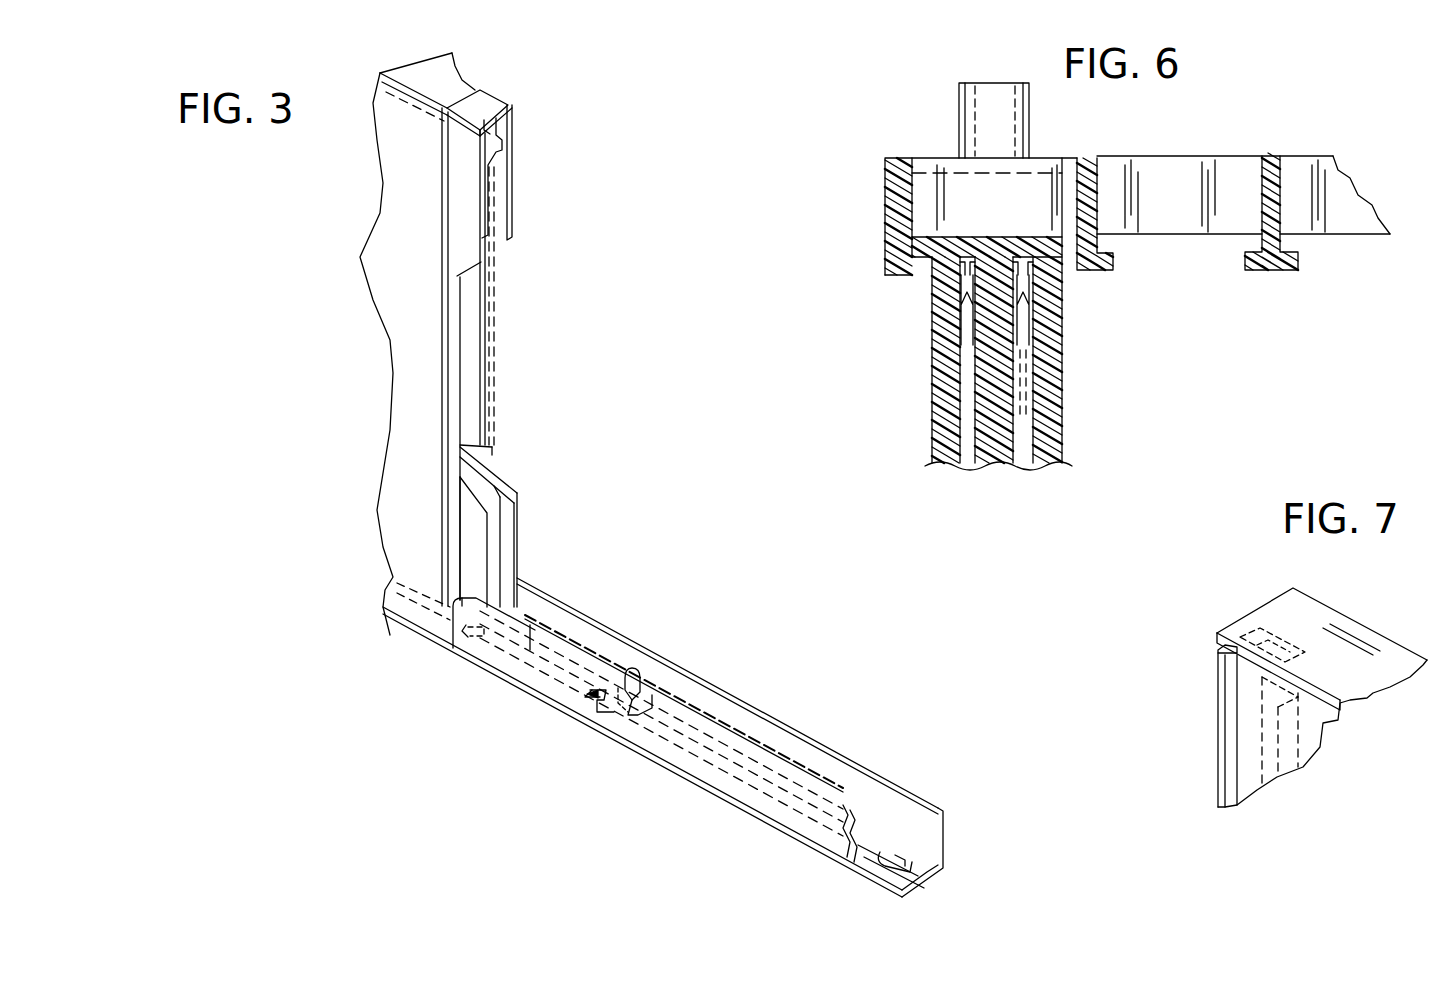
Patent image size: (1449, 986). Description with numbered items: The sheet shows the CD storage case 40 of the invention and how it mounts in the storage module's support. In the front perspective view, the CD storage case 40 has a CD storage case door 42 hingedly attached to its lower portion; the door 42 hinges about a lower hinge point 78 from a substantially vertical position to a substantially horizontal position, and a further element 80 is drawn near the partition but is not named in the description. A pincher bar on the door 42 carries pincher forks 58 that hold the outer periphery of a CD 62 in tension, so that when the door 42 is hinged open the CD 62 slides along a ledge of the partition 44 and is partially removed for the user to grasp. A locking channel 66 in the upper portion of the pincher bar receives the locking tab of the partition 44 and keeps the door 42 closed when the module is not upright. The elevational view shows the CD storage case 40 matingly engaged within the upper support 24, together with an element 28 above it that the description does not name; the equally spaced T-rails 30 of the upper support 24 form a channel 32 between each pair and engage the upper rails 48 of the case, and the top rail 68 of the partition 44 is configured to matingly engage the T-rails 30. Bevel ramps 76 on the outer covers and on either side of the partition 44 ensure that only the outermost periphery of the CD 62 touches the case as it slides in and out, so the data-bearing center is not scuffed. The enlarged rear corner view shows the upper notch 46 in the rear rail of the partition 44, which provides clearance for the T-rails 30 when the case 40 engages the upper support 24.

In FIG. 6, the upper support 24 is at (868, 238).
In FIG. 6, the tube 28 is at (960, 123).
In FIG. 6, the T-rails 30 is at (1086, 160).
In FIG. 6, the channel 32 is at (1168, 266).
In FIG. 3, the CD storage case 40 is at (560, 217).
In FIG. 7, the CD storage case 40 is at (1180, 703).
In FIG. 3, the CD storage case door 42 is at (920, 782).
In FIG. 3, the partition 44 is at (482, 485).
In FIG. 7, the upper notch 46 is at (1223, 650).
In FIG. 3, the upper rails 48 is at (452, 78).
In FIG. 7, the upper rails 48 is at (1262, 617).
In FIG. 3, the pincher forks 58 is at (643, 682).
In FIG. 6, the CD 62 is at (970, 467).
In FIG. 3, the locking channel 66 is at (927, 878).
In FIG. 6, the top rail 68 is at (1047, 243).
In FIG. 7, the top rail 68 is at (1318, 637).
In FIG. 6, the bevel ramps 76 is at (958, 320).
In FIG. 3, the lower hinge point 78 is at (474, 634).
In FIG. 3, the bent tab 80 is at (495, 460).